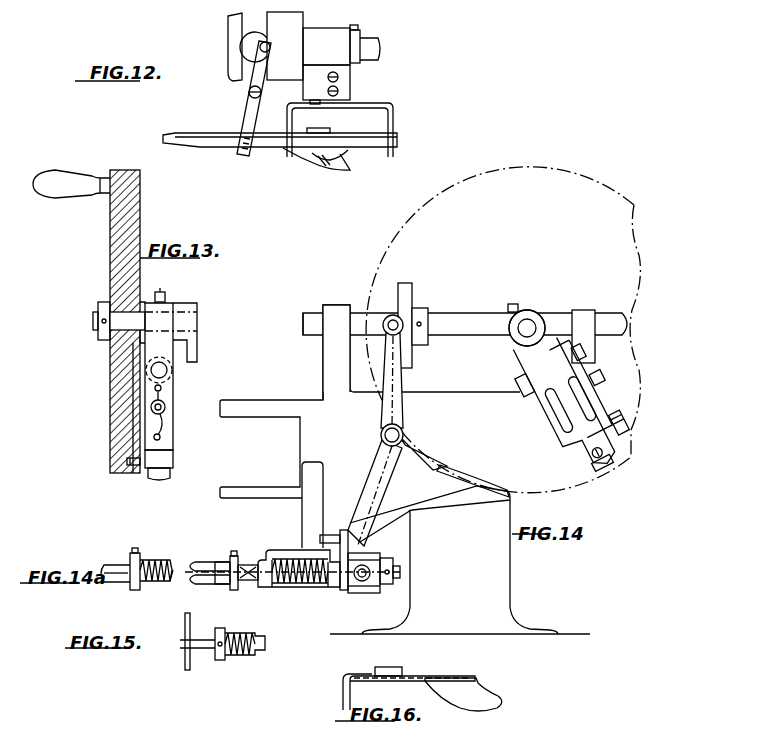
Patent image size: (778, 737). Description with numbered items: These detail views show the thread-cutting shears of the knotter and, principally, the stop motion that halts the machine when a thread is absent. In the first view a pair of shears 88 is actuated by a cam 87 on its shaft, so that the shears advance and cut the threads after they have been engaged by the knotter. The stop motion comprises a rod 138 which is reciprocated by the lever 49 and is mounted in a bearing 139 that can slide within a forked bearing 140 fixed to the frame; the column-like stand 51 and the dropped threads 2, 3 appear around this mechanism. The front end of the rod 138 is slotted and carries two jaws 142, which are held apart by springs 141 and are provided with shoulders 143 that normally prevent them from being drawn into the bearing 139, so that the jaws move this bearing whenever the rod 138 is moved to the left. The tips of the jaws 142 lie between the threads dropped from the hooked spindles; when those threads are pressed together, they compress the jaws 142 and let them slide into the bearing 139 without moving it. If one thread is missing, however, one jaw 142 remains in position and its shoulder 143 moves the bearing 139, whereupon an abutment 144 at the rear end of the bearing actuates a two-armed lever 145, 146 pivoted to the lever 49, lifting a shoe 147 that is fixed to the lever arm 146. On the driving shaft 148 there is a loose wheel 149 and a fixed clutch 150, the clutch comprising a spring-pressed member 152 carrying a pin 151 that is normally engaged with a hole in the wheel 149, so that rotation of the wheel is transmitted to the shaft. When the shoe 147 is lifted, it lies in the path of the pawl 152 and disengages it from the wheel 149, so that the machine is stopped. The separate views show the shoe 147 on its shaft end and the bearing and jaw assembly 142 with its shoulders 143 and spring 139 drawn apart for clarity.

In FIG. 14, the fork arm 2 is at (205, 555).
In FIG. 14, the fork arm 3 is at (207, 587).
In FIG. 14, the lever 49 is at (382, 424).
In FIG. 14, the stand 51 is at (508, 585).
In FIG. 12, the cam 87 is at (300, 22).
In FIG. 12, the shears 88 is at (213, 140).
In FIG. 14, the rod 138 is at (359, 592).
In FIG. 14, the bearing 139 is at (320, 586).
In FIG. 14A, the bearing 139 is at (152, 585).
In FIG. 14, the forked bearing 140 is at (264, 556).
In FIG. 14, the springs 141 is at (250, 584).
In FIG. 14, the jaws 142 is at (200, 567).
In FIG. 15, the jaws 142 is at (196, 651).
In FIG. 14, the shoulders 143 is at (236, 556).
In FIG. 14A, the shoulders 143 is at (128, 558).
In FIG. 14, the abutment 144 is at (343, 530).
In FIG. 14, the lever 145 is at (386, 518).
In FIG. 14, the lever arm 146 is at (442, 497).
In FIG. 14, the shoe 147 is at (510, 495).
In FIG. 16, the shoe 147 is at (490, 698).
In FIG. 14, the driving shaft 148 is at (530, 320).
In FIG. 16, the driving shaft 148 is at (415, 679).
In FIG. 13, the wheel 149 is at (141, 191).
In FIG. 13, the clutch 150 is at (170, 368).
In FIG. 14, the clutch 150 is at (540, 388).
In FIG. 13, the pin 151 is at (133, 467).
In FIG. 14, the pin 151 is at (607, 453).
In FIG. 13, the spring pressed member 152 is at (172, 461).
In FIG. 14, the spring pressed member 152 is at (604, 430).